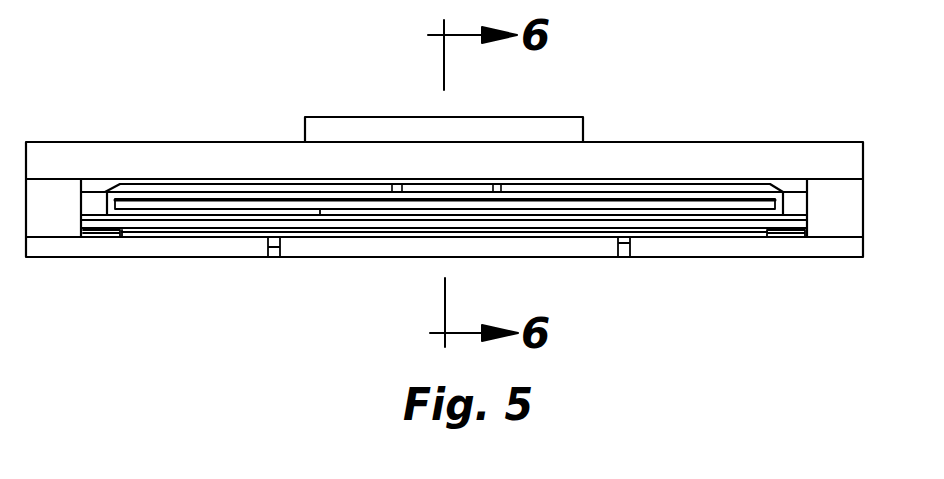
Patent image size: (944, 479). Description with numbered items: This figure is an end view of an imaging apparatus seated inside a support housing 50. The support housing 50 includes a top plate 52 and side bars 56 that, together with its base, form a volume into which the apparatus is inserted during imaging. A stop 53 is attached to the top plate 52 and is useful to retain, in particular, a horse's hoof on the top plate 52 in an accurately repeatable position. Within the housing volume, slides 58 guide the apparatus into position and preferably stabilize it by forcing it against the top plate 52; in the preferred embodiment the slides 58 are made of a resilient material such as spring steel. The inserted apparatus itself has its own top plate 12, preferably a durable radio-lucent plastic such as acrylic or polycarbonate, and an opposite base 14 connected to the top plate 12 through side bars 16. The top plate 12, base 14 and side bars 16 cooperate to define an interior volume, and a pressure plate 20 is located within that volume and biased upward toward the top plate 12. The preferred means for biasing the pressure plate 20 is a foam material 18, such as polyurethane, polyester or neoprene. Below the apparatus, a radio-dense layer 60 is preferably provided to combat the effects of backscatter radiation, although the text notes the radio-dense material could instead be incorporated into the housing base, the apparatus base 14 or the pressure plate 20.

The support housing 50 is at (695, 78).
The top plate 52 is at (640, 142).
The stop 53 is at (352, 117).
The side bars 56 is at (57, 220).
The top plate 12 is at (793, 185).
The side bars 16 is at (95, 205).
The pressure plate 20 is at (228, 203).
The foam material 18 is at (341, 215).
The base 14 is at (673, 222).
The radio-dense layer 60 is at (187, 237).
The slides 58 is at (108, 237).